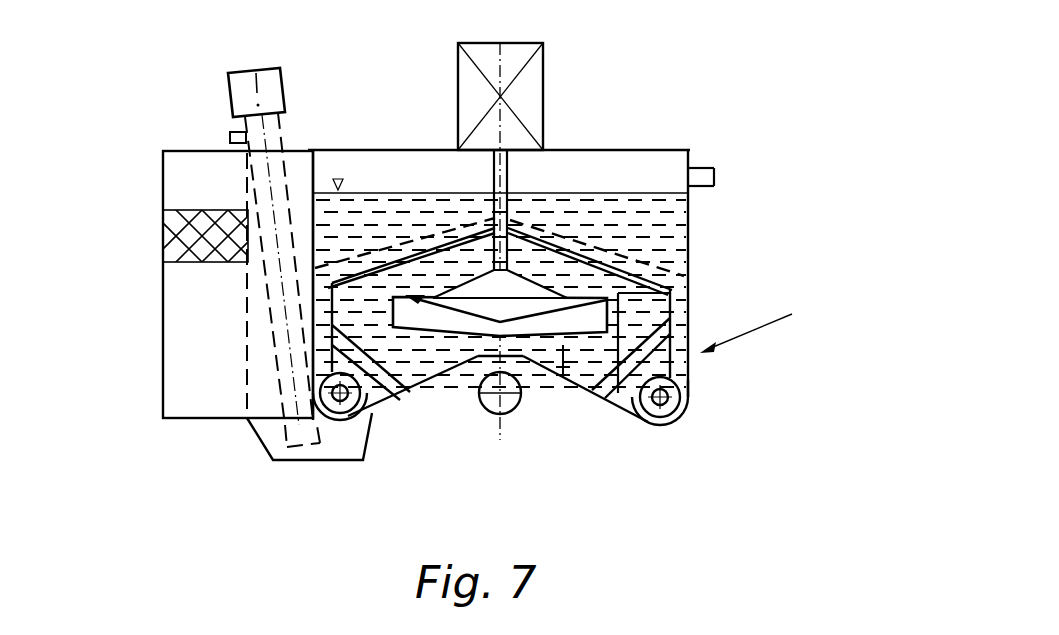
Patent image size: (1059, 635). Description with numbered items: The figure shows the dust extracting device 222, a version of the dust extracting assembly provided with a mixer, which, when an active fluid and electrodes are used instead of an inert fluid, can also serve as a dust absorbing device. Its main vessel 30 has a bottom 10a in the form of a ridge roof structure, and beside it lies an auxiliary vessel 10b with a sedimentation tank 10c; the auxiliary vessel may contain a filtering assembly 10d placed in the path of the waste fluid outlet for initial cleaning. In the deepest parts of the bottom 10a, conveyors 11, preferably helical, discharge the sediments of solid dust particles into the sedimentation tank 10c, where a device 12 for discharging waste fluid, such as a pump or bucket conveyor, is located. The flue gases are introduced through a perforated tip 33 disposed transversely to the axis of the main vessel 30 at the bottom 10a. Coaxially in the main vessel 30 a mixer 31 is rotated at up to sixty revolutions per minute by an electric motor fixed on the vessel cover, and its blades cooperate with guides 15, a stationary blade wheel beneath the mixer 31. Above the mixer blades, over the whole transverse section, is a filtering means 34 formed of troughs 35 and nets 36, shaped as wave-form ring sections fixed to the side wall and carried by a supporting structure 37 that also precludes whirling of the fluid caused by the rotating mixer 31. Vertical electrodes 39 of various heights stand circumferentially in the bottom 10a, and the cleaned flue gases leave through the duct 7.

The duct 7 is at (708, 165).
The bottom 10a is at (531, 358).
The auxiliary vessel 10b is at (185, 362).
The sedimentation tank 10c is at (270, 438).
The filtering assembly 10d is at (165, 263).
The conveyor 11 is at (342, 396).
The device for discharging waste fluid 12 is at (255, 128).
The guides 15 is at (415, 317).
The main vessel 30 is at (643, 172).
The mixer 31 is at (513, 288).
The perforated tip 33 is at (497, 397).
The filtering means 34 is at (403, 248).
The troughs 35 is at (686, 294).
The nets 36 is at (640, 260).
The supporting structure 37 is at (680, 373).
The vertical electrodes 39 is at (567, 378).
The dust extracting device 222 is at (742, 315).